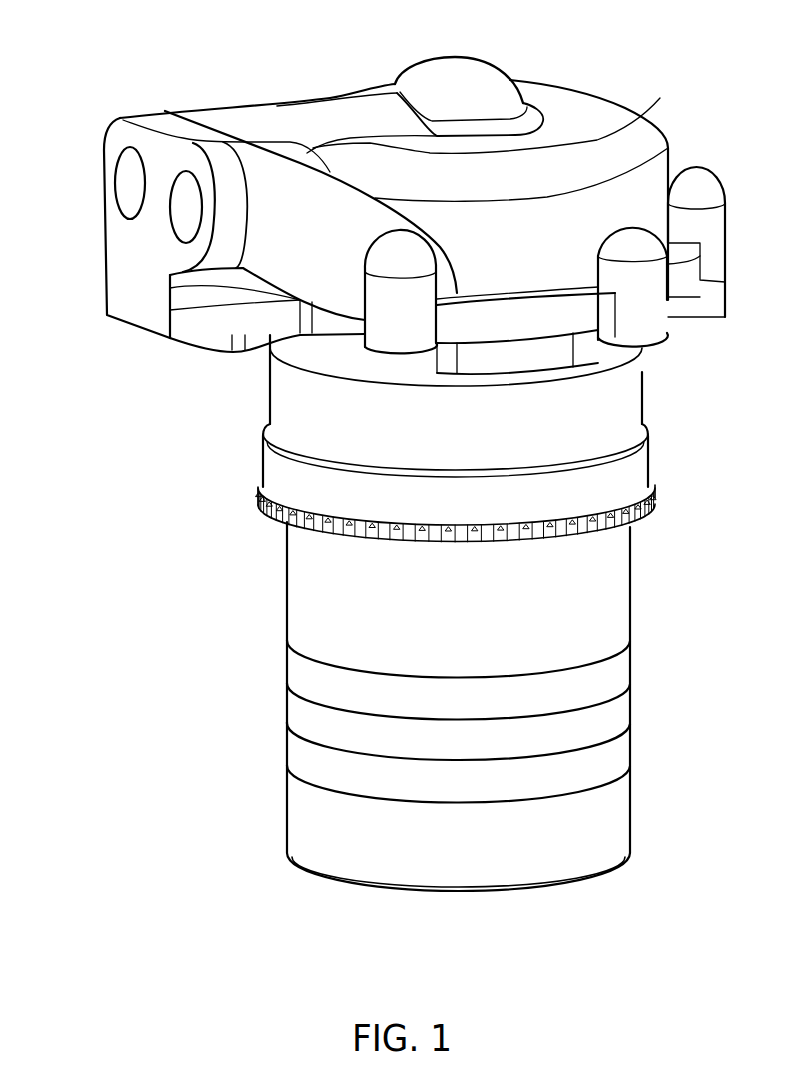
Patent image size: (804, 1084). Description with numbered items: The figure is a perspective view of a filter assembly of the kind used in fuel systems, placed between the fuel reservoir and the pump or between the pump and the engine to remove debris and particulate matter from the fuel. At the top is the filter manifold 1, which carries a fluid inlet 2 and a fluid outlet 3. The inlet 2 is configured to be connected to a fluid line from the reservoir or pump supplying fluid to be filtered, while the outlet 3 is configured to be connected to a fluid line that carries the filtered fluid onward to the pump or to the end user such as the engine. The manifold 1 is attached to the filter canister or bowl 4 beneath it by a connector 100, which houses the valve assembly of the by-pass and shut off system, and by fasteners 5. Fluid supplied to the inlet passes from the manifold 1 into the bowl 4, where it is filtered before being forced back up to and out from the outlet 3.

The filter manifold 1 is at (543, 83).
The fluid inlet 2 is at (128, 183).
The fluid outlet 3 is at (187, 218).
The filter canister or bowl 4 is at (612, 607).
The fasteners 5 is at (700, 180).
The connector 100 is at (628, 413).